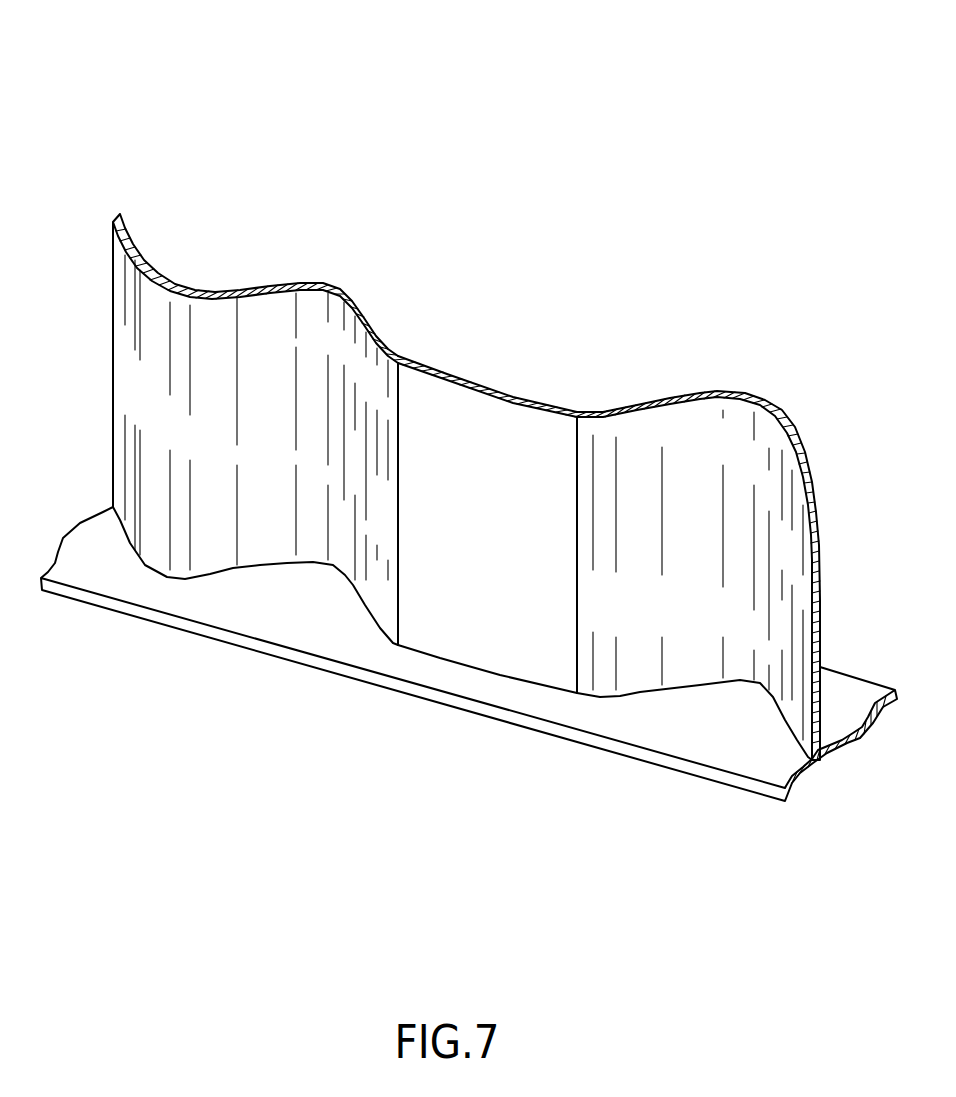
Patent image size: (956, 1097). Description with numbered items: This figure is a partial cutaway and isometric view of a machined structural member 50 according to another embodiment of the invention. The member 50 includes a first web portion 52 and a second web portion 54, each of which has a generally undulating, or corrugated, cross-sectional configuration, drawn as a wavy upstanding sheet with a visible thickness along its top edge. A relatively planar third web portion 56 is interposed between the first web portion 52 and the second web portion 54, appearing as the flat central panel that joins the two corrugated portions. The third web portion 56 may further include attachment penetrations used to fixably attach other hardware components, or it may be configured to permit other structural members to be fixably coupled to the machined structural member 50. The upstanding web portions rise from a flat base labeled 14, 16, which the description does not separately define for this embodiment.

The machined structural member 50 is at (469, 411).
The first web portion 52 is at (243, 240).
The second web portion 54 is at (715, 380).
The third web portion 56 is at (485, 352).
The base plate 14 is at (469, 654).
The base plate layer 16 is at (177, 622).